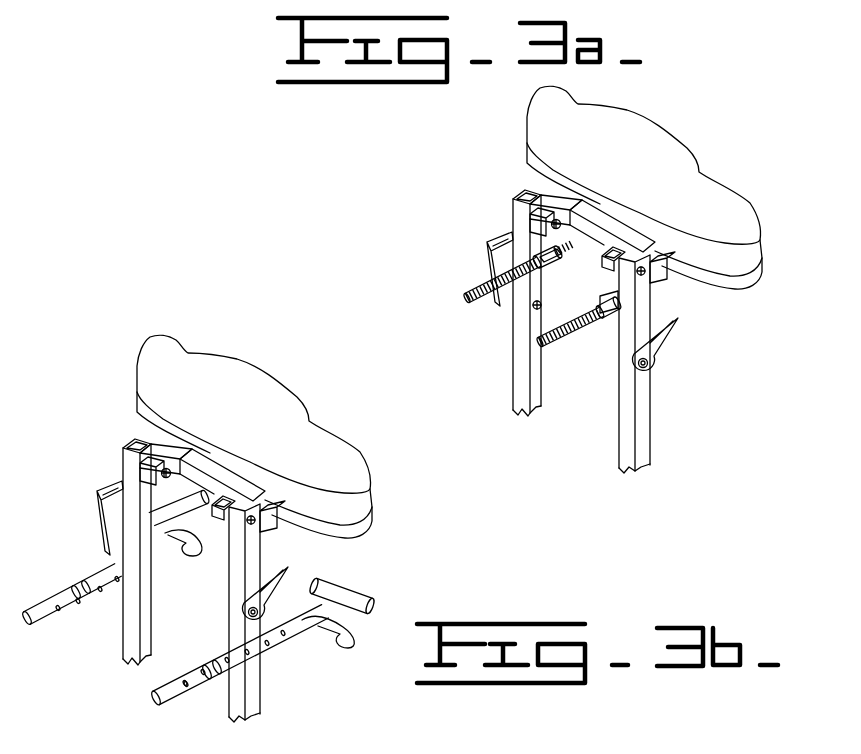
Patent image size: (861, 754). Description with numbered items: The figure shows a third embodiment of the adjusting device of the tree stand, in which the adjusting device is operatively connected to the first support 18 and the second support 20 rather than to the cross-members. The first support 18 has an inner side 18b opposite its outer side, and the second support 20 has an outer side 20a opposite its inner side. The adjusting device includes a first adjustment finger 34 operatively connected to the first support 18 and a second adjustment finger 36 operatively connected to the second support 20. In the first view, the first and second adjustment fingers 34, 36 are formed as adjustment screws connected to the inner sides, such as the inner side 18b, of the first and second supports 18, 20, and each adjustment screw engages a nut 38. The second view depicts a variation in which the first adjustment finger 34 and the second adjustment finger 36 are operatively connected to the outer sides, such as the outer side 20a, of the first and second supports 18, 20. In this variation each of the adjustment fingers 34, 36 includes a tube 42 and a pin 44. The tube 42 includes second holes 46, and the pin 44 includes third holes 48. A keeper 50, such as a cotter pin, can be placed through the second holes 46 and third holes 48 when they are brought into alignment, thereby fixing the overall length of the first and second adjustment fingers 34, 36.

In FIG. 3A, the first support 18 is at (512, 388).
In FIG. 3A, the inner side 18b is at (537, 389).
In FIG. 3A, the second support 20 is at (652, 420).
In FIG. 3A, the outer side 20a is at (657, 447).
In FIG. 3A, the first adjustment finger 34 is at (466, 285).
In FIG. 3B, the first adjustment finger 34 is at (76, 568).
In FIG. 3A, the second adjustment finger 36 is at (581, 345).
In FIG. 3B, the second adjustment finger 36 is at (307, 649).
In FIG. 3A, the nut 38 is at (548, 258).
In FIG. 3B, the tube 42 is at (218, 713).
In FIG. 3B, the pin 44 is at (79, 605).
In FIG. 3B, the second holes 46 is at (264, 647).
In FIG. 3B, the third holes 48 is at (187, 689).
In FIG. 3B, the keeper 50 is at (190, 563).